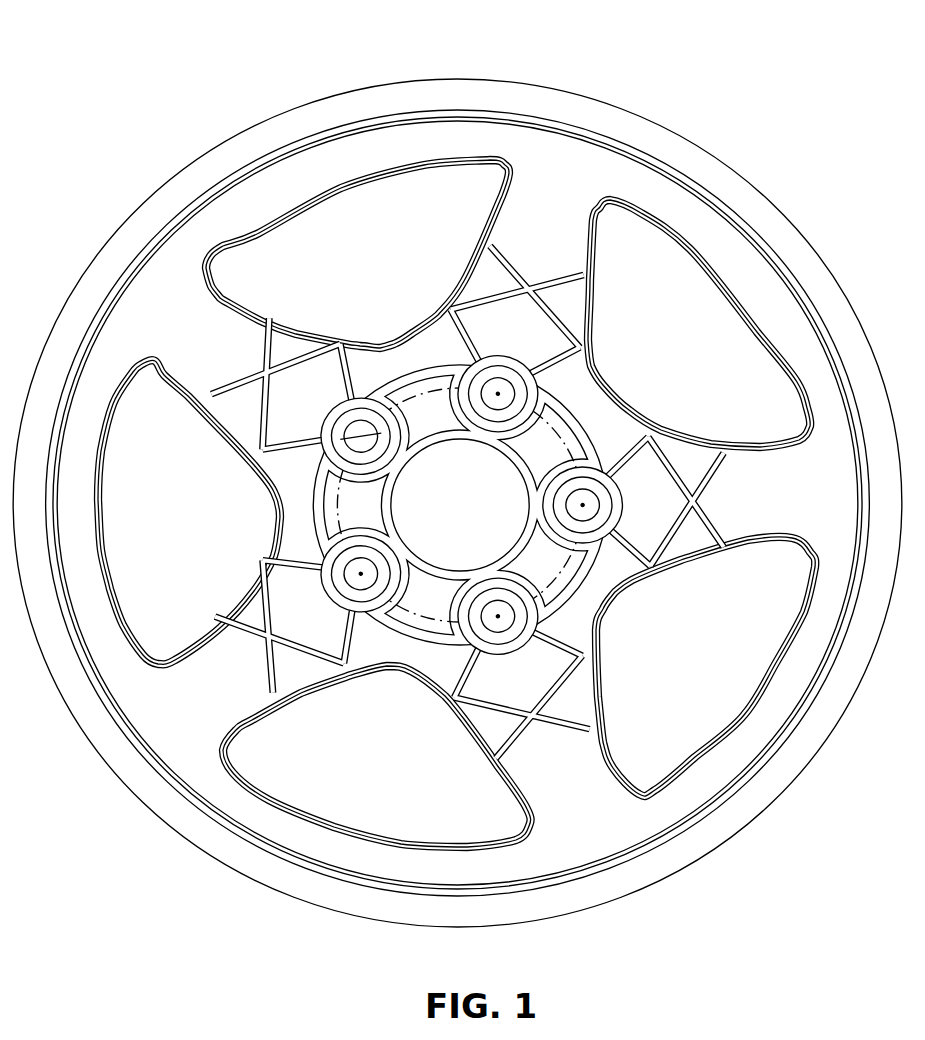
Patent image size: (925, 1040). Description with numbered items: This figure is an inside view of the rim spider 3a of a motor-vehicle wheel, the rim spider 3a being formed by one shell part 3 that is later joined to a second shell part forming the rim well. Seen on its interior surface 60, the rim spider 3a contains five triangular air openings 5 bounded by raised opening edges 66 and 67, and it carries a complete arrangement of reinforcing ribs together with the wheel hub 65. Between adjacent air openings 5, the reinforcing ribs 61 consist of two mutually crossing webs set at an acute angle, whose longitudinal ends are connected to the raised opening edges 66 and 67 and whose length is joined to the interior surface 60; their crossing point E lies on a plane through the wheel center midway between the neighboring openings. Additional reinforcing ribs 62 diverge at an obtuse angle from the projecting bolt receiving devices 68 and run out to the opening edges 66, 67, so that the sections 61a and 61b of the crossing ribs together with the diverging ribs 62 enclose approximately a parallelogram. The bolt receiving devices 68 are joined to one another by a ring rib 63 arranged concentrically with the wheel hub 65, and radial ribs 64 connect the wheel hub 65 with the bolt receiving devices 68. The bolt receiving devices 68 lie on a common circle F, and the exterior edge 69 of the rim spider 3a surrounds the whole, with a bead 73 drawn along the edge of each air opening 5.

The shell part 3 is at (360, 89).
The rim spider 3a is at (750, 107).
The exterior edge 69 is at (553, 116).
The interior surface 60 is at (178, 733).
The air openings 5 is at (456, 488).
The bead along opening edge 73 is at (378, 168).
The opening edge 67 is at (496, 222).
The opening edge 66 is at (598, 258).
The reinforcing ribs 61 is at (556, 259).
The rib section 61a is at (421, 467).
The rib section 61b is at (457, 519).
The reinforcing ribs 62 is at (505, 358).
The ring rib 63 is at (429, 358).
The radial ribs 64 is at (530, 393).
The wheel hub 65 is at (514, 468).
The bolt receiving devices 68 is at (590, 503).
The bolt pitch circle F is at (340, 508).
The crossing point E is at (258, 646).